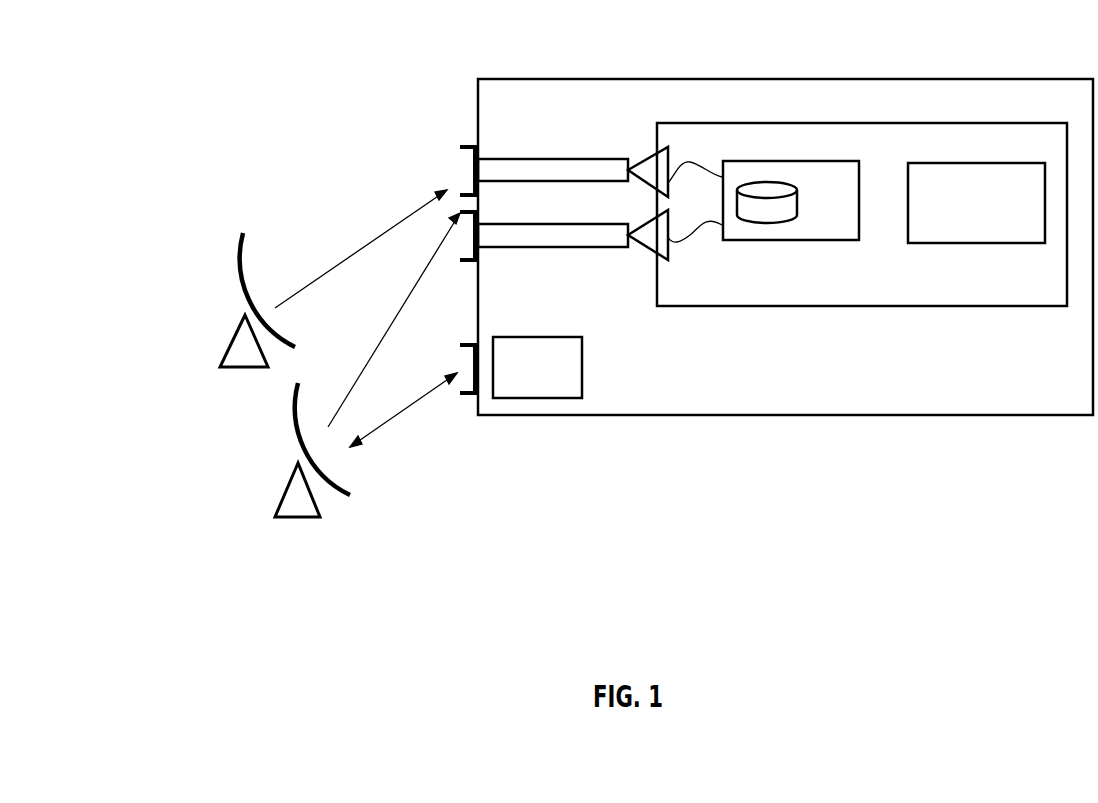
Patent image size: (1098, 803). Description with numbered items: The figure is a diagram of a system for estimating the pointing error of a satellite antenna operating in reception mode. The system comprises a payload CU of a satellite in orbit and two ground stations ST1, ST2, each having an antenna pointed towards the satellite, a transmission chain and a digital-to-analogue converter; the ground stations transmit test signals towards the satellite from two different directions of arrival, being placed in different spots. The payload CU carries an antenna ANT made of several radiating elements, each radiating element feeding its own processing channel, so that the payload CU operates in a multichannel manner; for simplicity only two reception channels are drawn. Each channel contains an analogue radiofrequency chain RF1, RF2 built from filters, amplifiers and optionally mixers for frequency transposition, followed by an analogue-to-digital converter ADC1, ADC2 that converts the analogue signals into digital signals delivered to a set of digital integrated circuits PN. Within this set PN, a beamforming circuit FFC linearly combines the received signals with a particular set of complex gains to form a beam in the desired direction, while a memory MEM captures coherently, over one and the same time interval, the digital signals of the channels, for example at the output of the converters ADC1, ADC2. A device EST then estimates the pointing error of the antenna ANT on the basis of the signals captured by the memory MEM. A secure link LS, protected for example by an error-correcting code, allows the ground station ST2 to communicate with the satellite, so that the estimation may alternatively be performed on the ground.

The payload CU is at (975, 75).
The set of digital integrated circuits PN is at (900, 135).
The beamforming circuit FFC is at (795, 175).
The device for estimating the pointing error EST is at (945, 178).
The memory MEM is at (781, 210).
The analogue-to-digital converter ADC1 is at (668, 158).
The analogue-to-digital converter ADC2 is at (652, 255).
The analogue radiofrequency chain RF1 is at (502, 153).
The analogue radiofrequency chain RF2 is at (513, 250).
The antenna ANT is at (458, 153).
The secure link LS is at (408, 408).
The ground station ST1 is at (222, 338).
The ground station ST2 is at (277, 488).